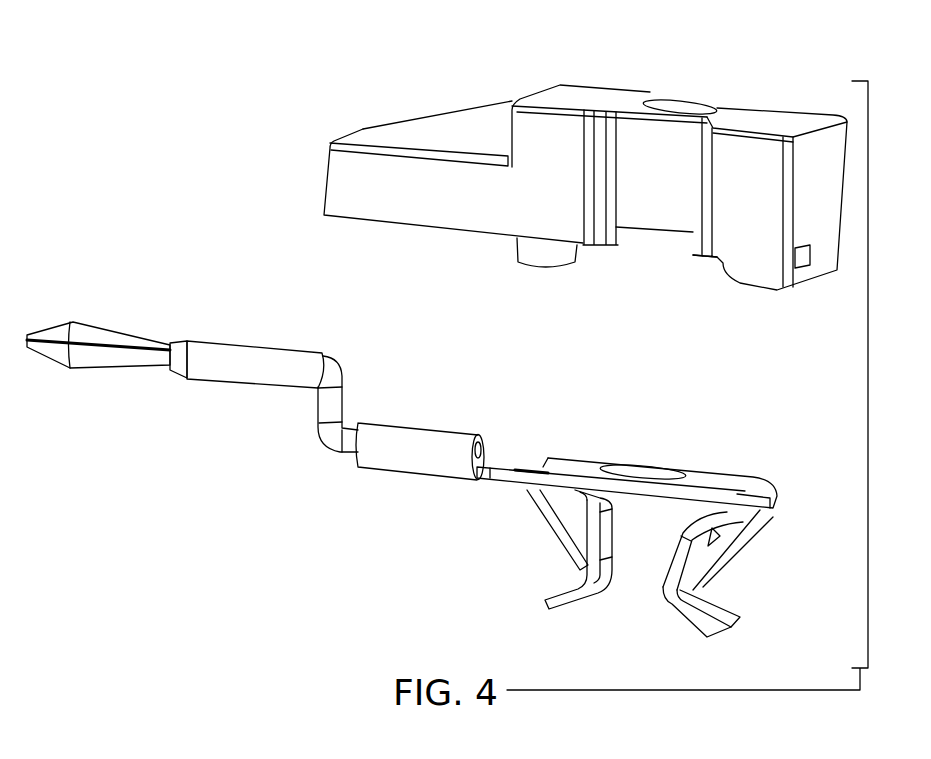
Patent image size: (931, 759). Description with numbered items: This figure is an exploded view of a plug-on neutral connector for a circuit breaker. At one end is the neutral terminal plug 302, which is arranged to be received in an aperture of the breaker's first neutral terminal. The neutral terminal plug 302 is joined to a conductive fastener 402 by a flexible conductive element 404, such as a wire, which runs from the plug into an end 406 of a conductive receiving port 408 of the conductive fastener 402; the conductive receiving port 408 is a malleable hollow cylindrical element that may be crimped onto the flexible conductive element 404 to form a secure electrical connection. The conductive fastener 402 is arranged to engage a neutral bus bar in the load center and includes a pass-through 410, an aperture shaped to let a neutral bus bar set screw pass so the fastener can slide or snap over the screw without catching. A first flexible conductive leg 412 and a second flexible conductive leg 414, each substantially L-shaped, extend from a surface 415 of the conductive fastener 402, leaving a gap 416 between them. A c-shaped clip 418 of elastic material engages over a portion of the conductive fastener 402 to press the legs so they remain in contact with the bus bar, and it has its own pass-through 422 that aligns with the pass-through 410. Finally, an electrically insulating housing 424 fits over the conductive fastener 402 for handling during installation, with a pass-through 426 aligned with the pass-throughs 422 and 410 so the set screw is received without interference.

The neutral terminal plug 302 is at (63, 328).
The conductive fastener 402 is at (582, 602).
The flexible conductive element 404 is at (267, 353).
The end 406 is at (185, 340).
The conductive receiving port 408 is at (418, 435).
The pass-through 410 is at (613, 465).
The first flexible conductive leg 412 is at (560, 587).
The second flexible conductive leg 414 is at (730, 617).
The surface 415 is at (527, 503).
The gap 416 is at (651, 560).
The c-shaped clip 418 is at (740, 552).
The pass-through 422 is at (650, 465).
The housing 424 is at (795, 108).
The pass-through 426 is at (675, 102).